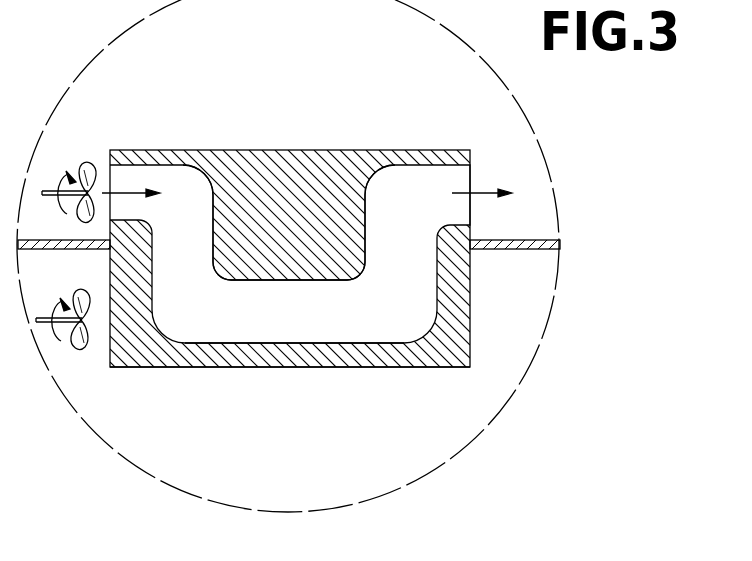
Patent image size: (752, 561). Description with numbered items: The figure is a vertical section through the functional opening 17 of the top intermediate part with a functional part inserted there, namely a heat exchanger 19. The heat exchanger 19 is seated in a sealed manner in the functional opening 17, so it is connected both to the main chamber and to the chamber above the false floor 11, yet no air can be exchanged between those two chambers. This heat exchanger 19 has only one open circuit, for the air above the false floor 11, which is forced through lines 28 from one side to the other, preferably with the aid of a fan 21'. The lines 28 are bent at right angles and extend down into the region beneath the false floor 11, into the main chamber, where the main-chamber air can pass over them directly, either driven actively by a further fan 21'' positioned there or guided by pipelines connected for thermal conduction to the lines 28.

The false floor 11 is at (512, 250).
The functional opening 17 is at (470, 252).
The heat exchanger 19 is at (292, 175).
The fan 21' is at (76, 162).
The further fan 21'' is at (83, 350).
The lines 28 is at (289, 333).